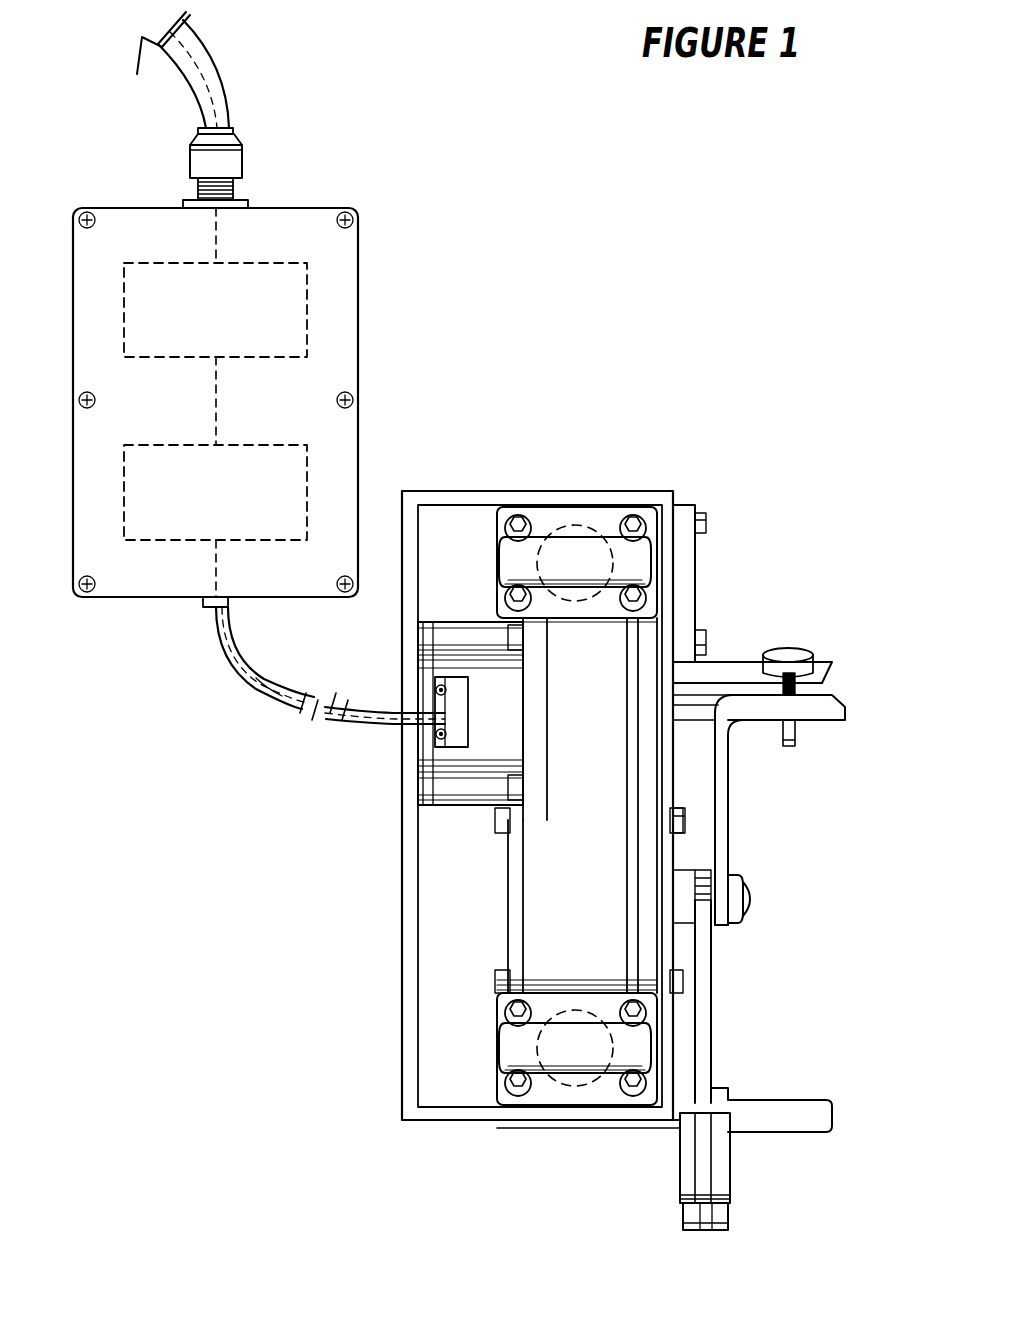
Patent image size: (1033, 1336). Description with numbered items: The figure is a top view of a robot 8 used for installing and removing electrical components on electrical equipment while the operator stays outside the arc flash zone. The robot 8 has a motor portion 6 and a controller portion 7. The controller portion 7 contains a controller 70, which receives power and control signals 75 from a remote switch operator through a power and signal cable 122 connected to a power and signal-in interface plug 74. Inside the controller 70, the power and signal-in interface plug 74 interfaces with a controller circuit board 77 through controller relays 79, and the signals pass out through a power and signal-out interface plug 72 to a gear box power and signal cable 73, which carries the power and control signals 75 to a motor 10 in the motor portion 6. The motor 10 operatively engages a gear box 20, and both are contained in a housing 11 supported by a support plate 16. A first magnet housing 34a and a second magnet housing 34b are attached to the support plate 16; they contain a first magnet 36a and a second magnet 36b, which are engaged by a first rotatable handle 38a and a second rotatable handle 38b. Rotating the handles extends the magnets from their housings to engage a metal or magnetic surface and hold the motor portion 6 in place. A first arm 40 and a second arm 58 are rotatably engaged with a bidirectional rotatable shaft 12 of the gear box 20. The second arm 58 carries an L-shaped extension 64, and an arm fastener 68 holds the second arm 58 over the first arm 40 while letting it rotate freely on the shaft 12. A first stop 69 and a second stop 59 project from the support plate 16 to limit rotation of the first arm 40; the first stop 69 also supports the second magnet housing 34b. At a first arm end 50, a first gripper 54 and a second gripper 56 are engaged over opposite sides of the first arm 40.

The motor portion 6 is at (792, 558).
The controller portion 7 is at (380, 182).
The robot 8 is at (772, 200).
The motor 10 is at (460, 622).
The housing 11 is at (404, 946).
The bidirectional rotatable shaft 12 is at (738, 900).
The support plate 16 is at (672, 788).
The gear box 20 is at (504, 872).
The first magnet housing 34a is at (550, 508).
The second magnet housing 34b is at (542, 1108).
The first magnet 36a is at (584, 516).
The second magnet 36b is at (572, 1096).
The first rotatable handle 38a is at (600, 552).
The second rotatable handle 38b is at (594, 1084).
The first arm 40 is at (712, 1031).
The first arm end 50 is at (694, 1228).
The first gripper 54 is at (680, 1174).
The second gripper 56 is at (730, 1176).
The second arm 58 is at (728, 806).
The second stop 59 is at (734, 726).
The extension 64 is at (844, 712).
The arm fastener 68 is at (734, 872).
The first stop 69 is at (782, 1134).
The controller 70 is at (74, 281).
The power and signal-out interface plug 72 is at (200, 605).
The gear box power and signal cable 73 is at (264, 690).
The power and signal-in interface plug 74 is at (192, 189).
The power and control signals 75 is at (234, 662).
The controller circuit board 77 is at (310, 495).
The controller relays 79 is at (310, 307).
The power and signal cable 122 is at (198, 58).